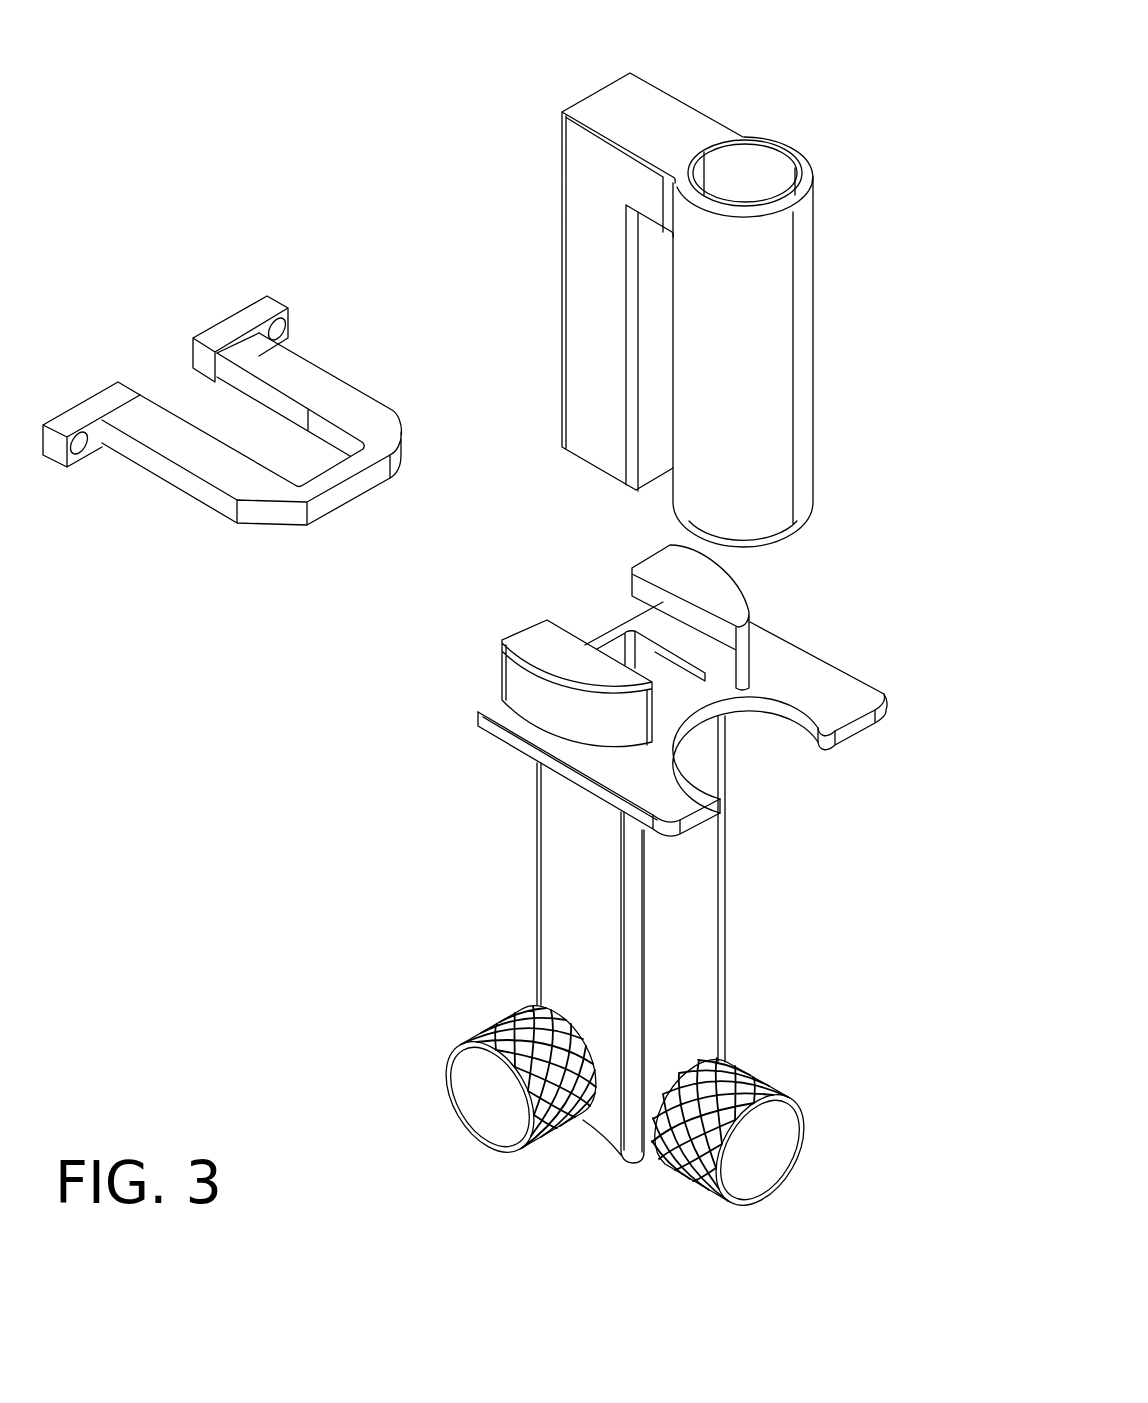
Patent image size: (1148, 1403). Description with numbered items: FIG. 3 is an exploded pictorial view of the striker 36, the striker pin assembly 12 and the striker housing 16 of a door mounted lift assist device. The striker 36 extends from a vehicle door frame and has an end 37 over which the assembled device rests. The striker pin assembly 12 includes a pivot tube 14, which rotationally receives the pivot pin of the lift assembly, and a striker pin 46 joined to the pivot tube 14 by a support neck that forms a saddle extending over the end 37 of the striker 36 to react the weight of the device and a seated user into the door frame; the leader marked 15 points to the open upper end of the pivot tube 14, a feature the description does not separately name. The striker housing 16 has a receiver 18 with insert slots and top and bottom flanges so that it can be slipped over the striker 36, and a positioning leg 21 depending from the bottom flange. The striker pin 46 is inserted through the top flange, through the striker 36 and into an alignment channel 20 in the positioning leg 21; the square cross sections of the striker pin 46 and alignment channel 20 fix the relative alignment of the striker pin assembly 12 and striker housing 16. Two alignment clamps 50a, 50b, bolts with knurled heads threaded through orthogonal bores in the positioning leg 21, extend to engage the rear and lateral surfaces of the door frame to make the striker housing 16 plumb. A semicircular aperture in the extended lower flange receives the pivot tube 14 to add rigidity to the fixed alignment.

The striker pin assembly 12 is at (679, 287).
The pivot tube 14 is at (818, 333).
The bore of sleeve 15 is at (803, 175).
The striker pin 46 is at (585, 298).
The striker 36 is at (260, 458).
The end of the striker 37 is at (335, 478).
The striker housing 16 is at (575, 877).
The receiver 18 is at (543, 652).
The alignment channel 20 is at (643, 657).
The positioning leg 21 is at (585, 865).
The alignment clamp 50a is at (485, 1092).
The alignment clamp 50b is at (773, 1140).